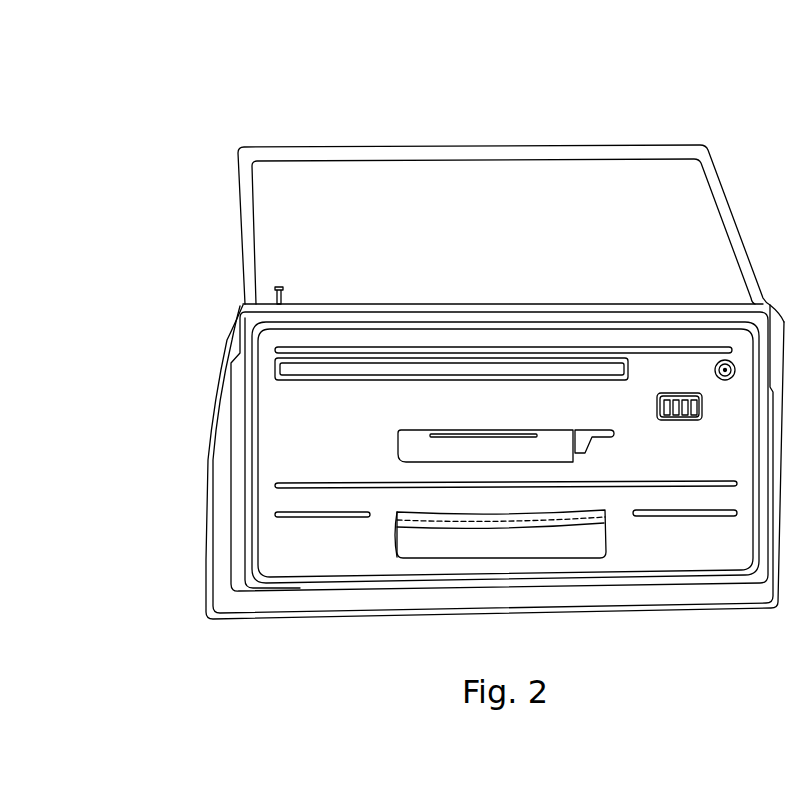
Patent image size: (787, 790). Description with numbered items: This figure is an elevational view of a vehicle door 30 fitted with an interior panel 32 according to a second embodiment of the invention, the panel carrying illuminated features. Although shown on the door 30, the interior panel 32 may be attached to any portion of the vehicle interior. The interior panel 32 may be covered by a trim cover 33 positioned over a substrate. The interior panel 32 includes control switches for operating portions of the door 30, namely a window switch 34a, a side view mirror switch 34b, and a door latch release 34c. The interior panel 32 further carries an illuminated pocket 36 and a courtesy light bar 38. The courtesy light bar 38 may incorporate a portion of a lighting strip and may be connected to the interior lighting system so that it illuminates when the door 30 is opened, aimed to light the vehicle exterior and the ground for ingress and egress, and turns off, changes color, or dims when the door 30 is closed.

The door 30 is at (516, 122).
The interior panel 32 is at (298, 443).
The trim cover 33 is at (353, 440).
The window switch 34a is at (655, 407).
The side view mirror switch 34b is at (725, 380).
The door latch release 34c is at (590, 438).
The illuminated pocket 36 is at (605, 532).
The courtesy light bar 38 is at (297, 517).